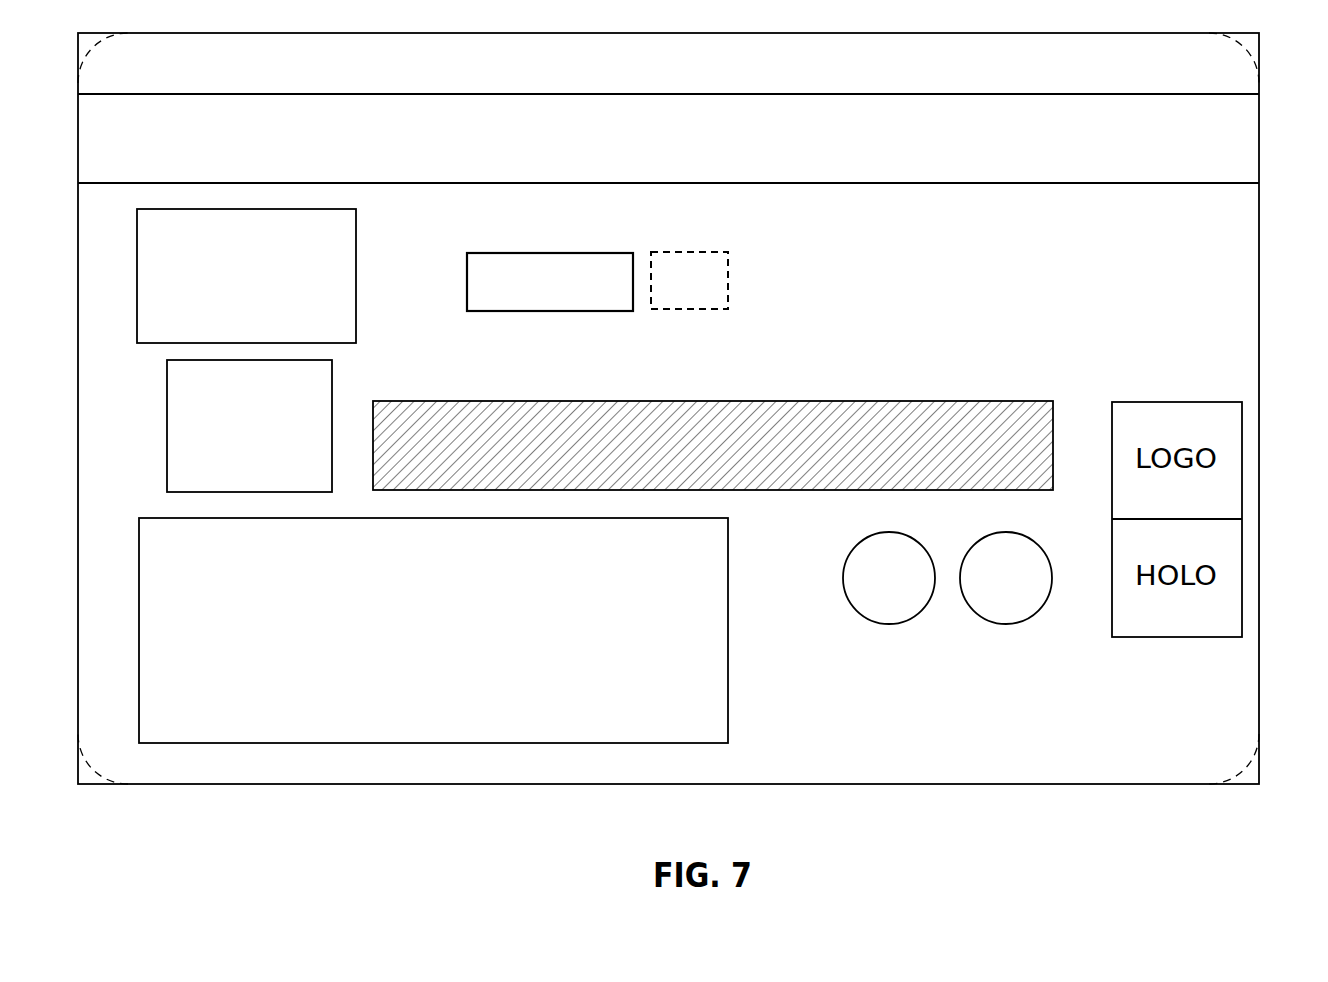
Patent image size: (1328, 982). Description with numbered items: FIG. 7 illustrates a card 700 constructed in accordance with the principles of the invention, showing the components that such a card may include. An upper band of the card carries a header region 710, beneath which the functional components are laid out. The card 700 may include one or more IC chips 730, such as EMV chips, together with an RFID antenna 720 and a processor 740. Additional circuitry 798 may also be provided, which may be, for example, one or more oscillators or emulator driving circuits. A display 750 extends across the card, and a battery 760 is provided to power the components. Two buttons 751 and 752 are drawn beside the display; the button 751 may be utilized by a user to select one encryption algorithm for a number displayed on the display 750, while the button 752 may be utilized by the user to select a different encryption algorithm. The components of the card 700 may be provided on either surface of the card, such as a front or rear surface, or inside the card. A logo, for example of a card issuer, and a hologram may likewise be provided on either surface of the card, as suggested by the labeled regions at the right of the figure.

The card 700 is at (1298, 408).
The device title/header region 710 is at (980, 95).
The RFID antenna 720 is at (250, 347).
The IC chip 730 is at (165, 423).
The processor 740 is at (470, 255).
The additional circuitry 798 is at (660, 253).
The display 750 is at (900, 400).
The button 751 is at (845, 578).
The button 752 is at (1003, 535).
The battery 760 is at (643, 742).